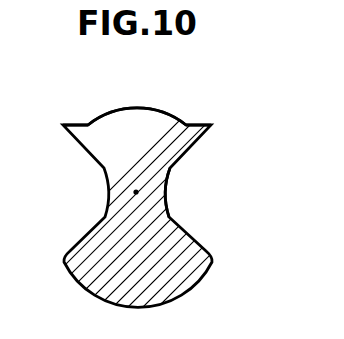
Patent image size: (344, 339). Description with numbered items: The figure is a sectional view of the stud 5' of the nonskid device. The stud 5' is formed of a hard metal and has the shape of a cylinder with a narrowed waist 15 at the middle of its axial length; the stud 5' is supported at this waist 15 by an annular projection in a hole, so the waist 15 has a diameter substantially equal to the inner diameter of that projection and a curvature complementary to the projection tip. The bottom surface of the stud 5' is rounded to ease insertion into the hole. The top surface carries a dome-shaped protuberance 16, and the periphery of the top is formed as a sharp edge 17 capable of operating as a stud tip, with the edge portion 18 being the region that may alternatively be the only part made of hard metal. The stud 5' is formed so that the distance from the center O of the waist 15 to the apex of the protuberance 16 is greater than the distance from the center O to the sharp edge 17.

The stud 5' is at (172, 169).
The waist 15 is at (168, 185).
The dome-shaped protuberance 16 is at (160, 116).
The sharp edge 17 is at (210, 127).
The edge portion 18 is at (71, 125).
The center of the waist O is at (134, 192).